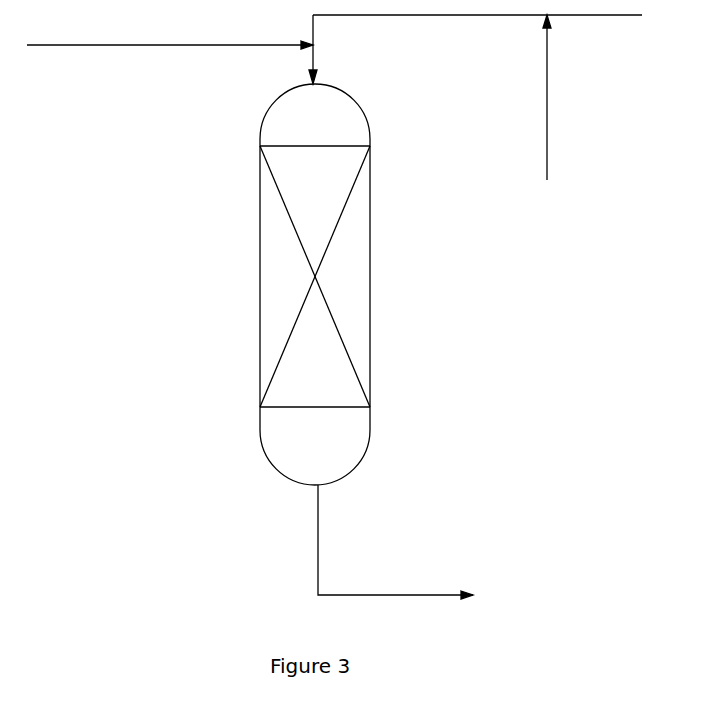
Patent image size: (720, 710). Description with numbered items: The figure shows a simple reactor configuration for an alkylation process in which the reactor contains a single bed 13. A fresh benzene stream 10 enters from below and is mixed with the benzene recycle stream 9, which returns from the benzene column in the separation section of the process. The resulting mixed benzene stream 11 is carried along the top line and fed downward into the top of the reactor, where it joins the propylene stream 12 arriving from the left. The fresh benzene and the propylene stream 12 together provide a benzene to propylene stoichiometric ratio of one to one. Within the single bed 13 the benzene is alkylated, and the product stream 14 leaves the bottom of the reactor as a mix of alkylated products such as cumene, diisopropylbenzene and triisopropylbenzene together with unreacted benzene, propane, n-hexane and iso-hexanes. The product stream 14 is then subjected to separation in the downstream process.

The benzene recycle stream 9 is at (610, 16).
The fresh benzene stream 10 is at (547, 142).
The mixed benzene stream 11 is at (427, 16).
The propylene stream 12 is at (86, 47).
The single bed 13 is at (370, 282).
The product stream 14 is at (320, 556).